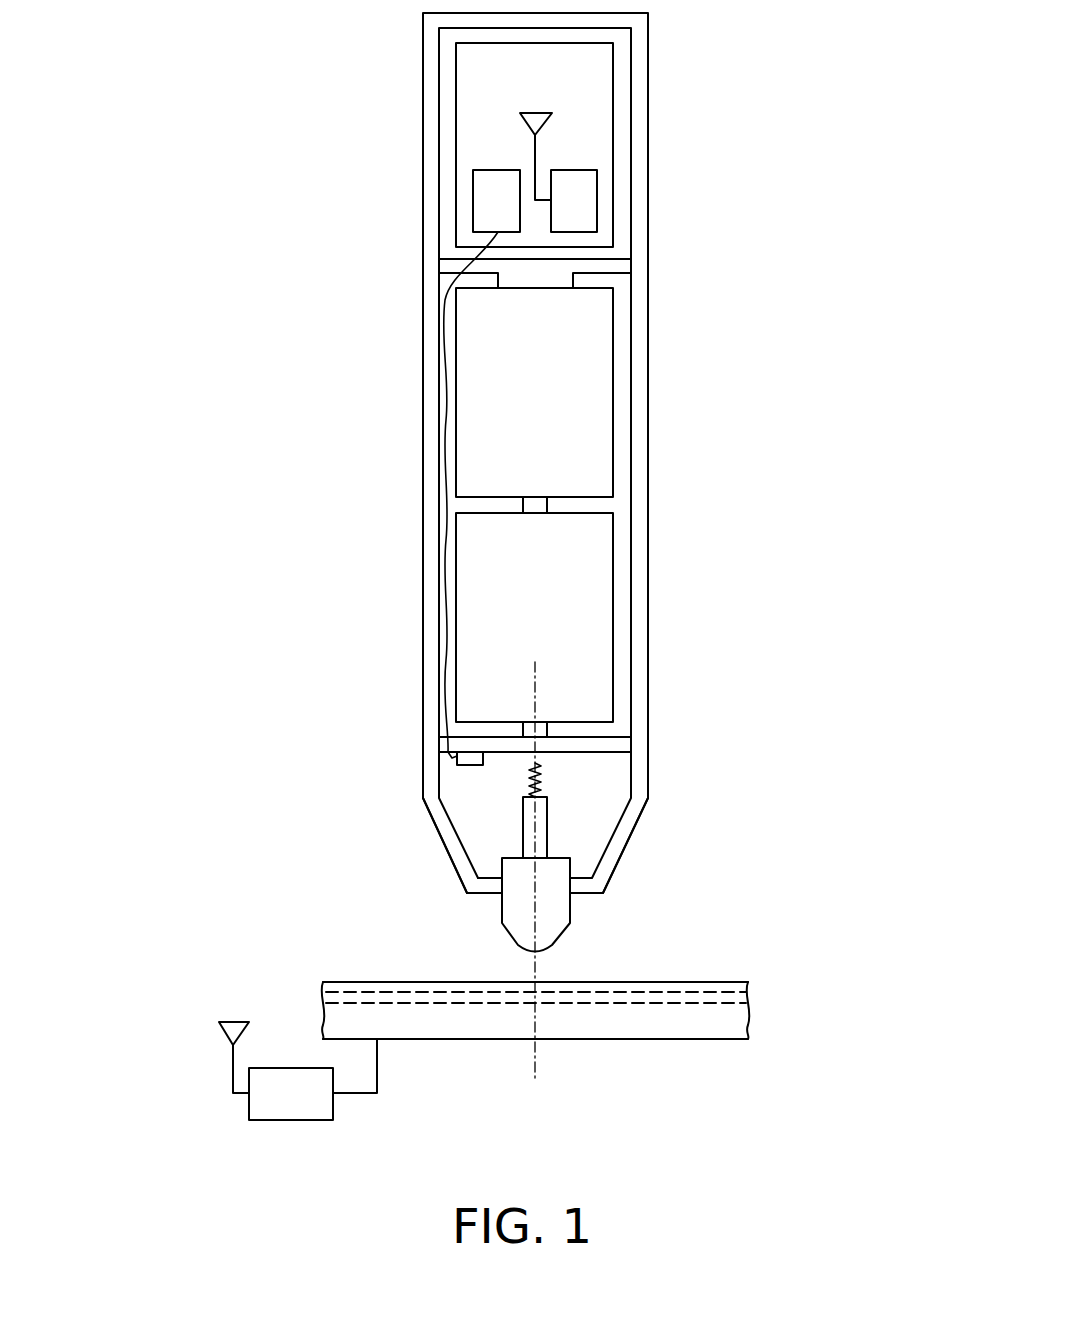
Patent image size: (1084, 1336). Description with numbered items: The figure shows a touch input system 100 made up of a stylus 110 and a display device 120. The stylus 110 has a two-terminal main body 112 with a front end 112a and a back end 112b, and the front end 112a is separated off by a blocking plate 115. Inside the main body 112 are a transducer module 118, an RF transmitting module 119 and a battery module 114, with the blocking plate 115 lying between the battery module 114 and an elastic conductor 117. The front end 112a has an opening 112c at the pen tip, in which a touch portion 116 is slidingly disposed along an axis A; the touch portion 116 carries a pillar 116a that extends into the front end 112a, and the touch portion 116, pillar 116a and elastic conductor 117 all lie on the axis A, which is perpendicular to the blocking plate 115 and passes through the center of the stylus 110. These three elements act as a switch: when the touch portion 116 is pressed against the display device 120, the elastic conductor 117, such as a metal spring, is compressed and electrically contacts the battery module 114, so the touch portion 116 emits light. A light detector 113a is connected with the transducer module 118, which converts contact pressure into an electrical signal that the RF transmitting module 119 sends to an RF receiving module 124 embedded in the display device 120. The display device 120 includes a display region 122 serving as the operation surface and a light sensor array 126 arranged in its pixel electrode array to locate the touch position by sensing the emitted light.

The touch input system 100 is at (843, 1145).
The stylus 110 is at (395, 387).
The main body 112 is at (640, 397).
The front end 112a is at (635, 862).
The back end 112b is at (663, 25).
The opening 112c is at (503, 883).
The light detector 113a is at (475, 760).
The battery module 114 is at (502, 602).
The blocking plate 115 is at (453, 747).
The touch portion 116 is at (552, 920).
The pillar 116a is at (543, 828).
The elastic conductor 117 is at (538, 775).
The transducer module 118 is at (495, 205).
The RF transmitting module 119 is at (577, 205).
The axis A is at (535, 699).
The display device 120 is at (277, 997).
The display region 122 is at (722, 1012).
The RF receiving module 124 is at (276, 1108).
The light sensor array 126 is at (613, 1003).